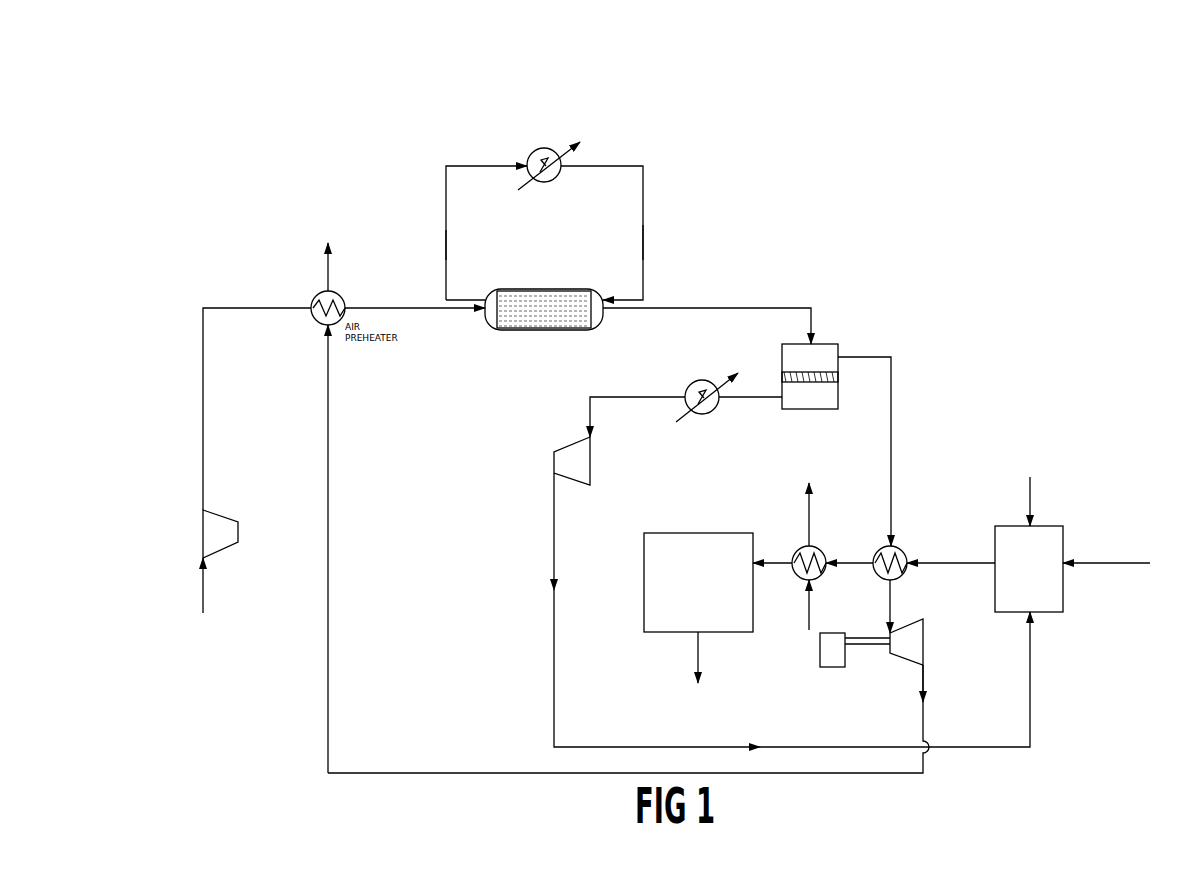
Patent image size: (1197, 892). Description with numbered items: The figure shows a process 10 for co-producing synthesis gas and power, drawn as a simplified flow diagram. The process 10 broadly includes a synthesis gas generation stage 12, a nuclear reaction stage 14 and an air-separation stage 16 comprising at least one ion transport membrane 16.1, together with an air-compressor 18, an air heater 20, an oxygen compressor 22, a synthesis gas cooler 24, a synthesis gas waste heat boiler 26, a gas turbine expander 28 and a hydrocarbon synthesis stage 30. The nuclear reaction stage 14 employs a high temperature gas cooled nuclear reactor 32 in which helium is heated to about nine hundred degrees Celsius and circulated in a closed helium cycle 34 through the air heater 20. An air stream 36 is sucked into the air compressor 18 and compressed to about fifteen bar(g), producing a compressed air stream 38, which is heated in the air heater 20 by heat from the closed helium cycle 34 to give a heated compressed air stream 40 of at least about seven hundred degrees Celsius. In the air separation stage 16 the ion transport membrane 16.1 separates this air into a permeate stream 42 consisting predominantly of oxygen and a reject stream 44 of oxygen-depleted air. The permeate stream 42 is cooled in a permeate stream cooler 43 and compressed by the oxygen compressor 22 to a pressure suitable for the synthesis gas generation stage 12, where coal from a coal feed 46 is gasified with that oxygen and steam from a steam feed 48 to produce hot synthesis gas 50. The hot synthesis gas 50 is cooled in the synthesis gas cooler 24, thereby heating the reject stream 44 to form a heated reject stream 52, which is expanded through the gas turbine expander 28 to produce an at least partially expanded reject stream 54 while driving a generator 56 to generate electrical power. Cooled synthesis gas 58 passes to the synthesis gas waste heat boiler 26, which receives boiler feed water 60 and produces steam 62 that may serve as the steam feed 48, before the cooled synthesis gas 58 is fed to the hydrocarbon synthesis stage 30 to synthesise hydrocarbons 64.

The process 10 is at (1067, 198).
The synthesis gas generation stage 12 is at (1045, 575).
The nuclear reaction stage 14 is at (683, 170).
The air-separation stage 16 is at (840, 343).
The ion transport membrane 16.1 is at (826, 385).
The air-compressor 18 is at (220, 520).
The air heater 20 is at (530, 330).
The oxygen compressor 22 is at (590, 461).
The synthesis gas cooler 24 is at (898, 548).
The synthesis gas waste heat boiler 26 is at (800, 550).
The gas turbine expander 28 is at (915, 640).
The hydrocarbon synthesis stage 30 is at (682, 595).
The high temperature gas cooled nuclear reactor 32 is at (527, 155).
The closed helium cycle 34 is at (446, 222).
The air stream 36 is at (203, 585).
The compressed air stream 38 is at (203, 375).
The heated compressed air stream 40 is at (740, 308).
The permeate stream 42 is at (655, 397).
The permeate stream cooler 43 is at (718, 412).
The reject stream 44 is at (891, 457).
The coal feed 46 is at (1032, 495).
The steam feed 48 is at (1105, 565).
The hot synthesis gas 50 is at (955, 563).
The heated reject stream 52 is at (893, 590).
The at least partially expanded reject stream 54 is at (921, 685).
The generator 56 is at (820, 650).
The cooled synthesis gas 58 is at (853, 563).
The boiler feed water 60 is at (811, 605).
The steam 62 is at (811, 510).
The hydrocarbons 64 is at (696, 660).